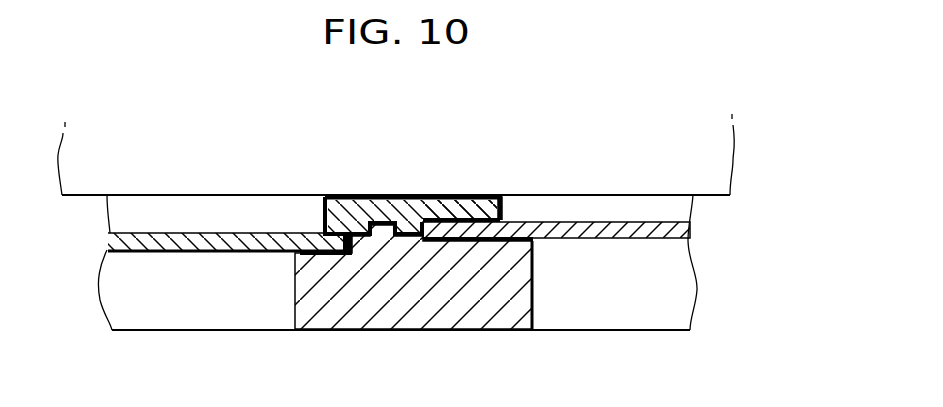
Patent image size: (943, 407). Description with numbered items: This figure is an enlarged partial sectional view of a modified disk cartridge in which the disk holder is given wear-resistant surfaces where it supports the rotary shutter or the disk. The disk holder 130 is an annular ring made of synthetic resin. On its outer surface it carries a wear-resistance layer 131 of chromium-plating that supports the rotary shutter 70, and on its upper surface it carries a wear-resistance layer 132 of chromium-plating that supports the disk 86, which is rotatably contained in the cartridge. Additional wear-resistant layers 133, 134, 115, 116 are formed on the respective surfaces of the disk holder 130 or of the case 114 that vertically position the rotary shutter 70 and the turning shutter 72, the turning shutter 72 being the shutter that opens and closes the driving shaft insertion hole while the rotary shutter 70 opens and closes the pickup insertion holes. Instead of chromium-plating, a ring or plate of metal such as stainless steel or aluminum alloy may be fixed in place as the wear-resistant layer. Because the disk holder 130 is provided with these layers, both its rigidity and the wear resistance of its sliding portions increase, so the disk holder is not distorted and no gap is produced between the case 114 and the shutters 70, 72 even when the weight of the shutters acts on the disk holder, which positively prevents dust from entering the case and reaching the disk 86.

The rotary shutter 70 is at (693, 226).
The turning shutter 72 is at (108, 230).
The disk 86 is at (727, 150).
The case 114 is at (418, 322).
The wear-resistant layer 115 is at (492, 248).
The wear-resistant layer 116 is at (330, 256).
The disk holder 130 is at (517, 198).
The wear-resistance layer 131 is at (403, 196).
The wear-resistance layer 132 is at (420, 196).
The wear-resistant layer 133 is at (463, 196).
The wear-resistant layer 134 is at (302, 197).